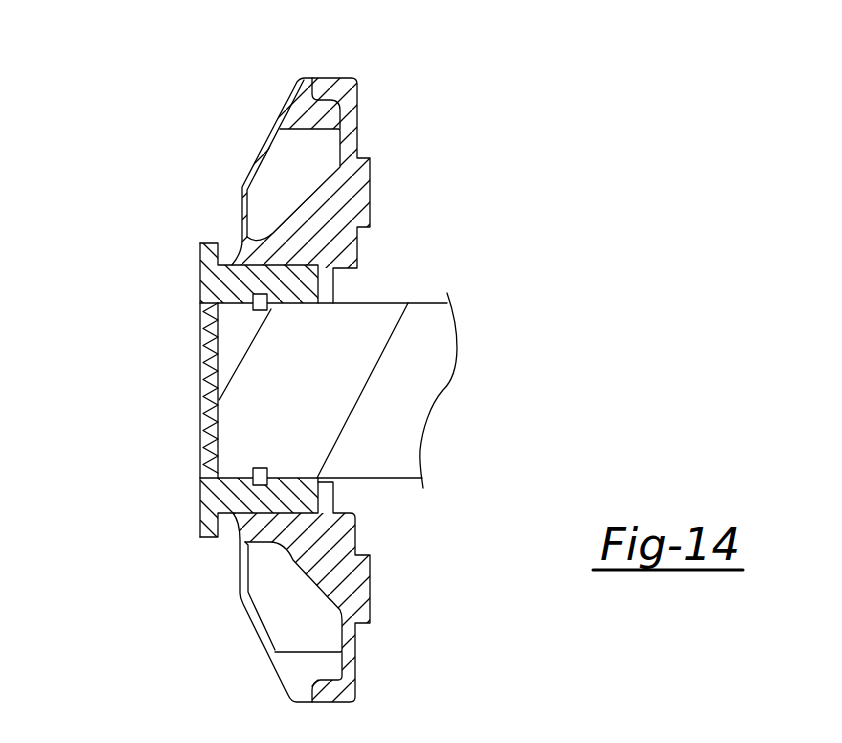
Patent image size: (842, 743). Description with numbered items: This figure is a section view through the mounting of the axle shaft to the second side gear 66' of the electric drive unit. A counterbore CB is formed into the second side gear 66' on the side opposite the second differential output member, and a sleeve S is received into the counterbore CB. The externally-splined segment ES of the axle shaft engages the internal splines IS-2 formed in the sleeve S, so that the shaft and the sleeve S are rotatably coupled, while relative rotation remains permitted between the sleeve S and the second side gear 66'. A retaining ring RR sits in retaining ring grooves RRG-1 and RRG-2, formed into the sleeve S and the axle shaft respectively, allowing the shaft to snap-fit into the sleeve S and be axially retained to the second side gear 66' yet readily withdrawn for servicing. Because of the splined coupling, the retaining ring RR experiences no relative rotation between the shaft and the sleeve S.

The second side gear 66' is at (301, 163).
The counterbore CB is at (272, 242).
The sleeve S is at (198, 278).
The retaining ring RR is at (253, 478).
The internal splines IS-2 is at (210, 413).
The externally-splined segment ES is at (330, 478).
The retaining ring groove RRG-1 is at (270, 300).
The retaining ring groove RRG-2 is at (267, 307).